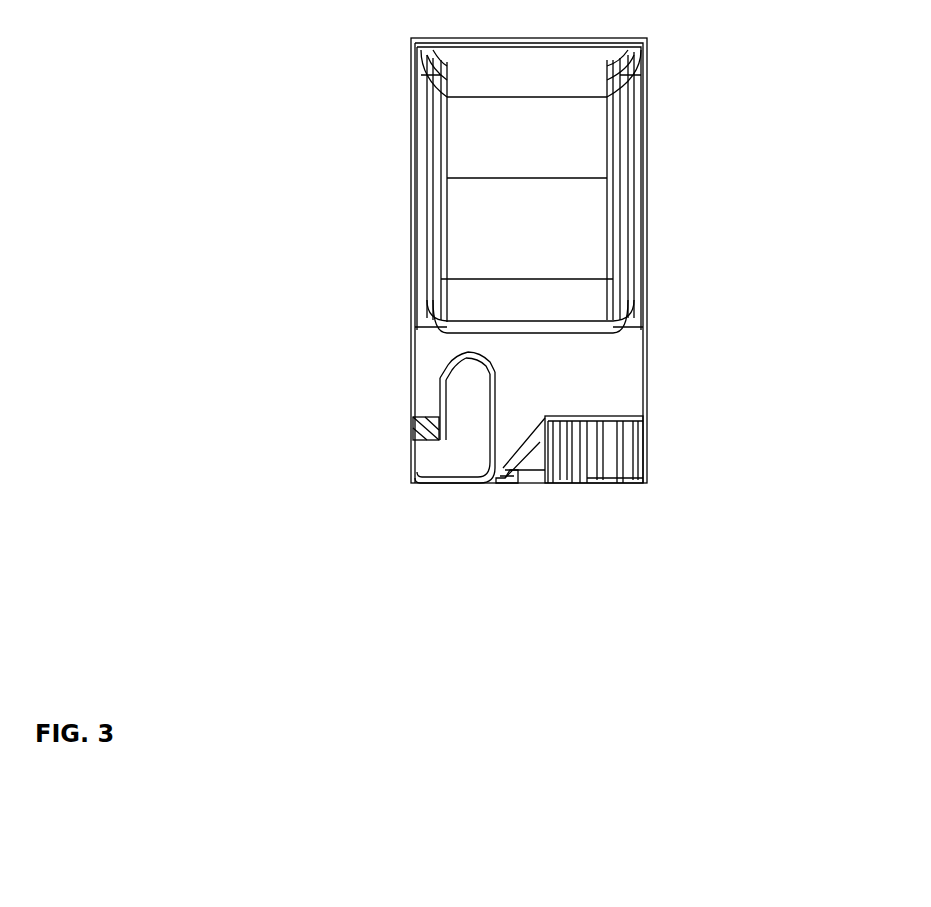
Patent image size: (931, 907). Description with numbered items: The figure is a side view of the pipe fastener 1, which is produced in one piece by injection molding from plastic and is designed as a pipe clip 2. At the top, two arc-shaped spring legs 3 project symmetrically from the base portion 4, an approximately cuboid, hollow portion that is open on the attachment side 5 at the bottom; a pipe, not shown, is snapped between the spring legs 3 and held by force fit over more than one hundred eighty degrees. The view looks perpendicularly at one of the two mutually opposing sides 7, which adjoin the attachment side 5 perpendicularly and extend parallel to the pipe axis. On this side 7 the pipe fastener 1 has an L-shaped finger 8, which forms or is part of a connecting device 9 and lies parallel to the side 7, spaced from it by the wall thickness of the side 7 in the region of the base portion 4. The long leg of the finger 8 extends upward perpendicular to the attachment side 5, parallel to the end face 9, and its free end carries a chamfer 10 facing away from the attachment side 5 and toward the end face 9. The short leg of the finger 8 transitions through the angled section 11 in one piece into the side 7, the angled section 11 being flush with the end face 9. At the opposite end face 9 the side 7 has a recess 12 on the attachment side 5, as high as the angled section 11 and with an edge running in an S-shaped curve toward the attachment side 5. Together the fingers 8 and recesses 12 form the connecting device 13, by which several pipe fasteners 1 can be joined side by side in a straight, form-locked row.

The pipe fastener 1 is at (281, 128).
The pipe clip 2 is at (529, 320).
The spring legs 3 is at (530, 135).
The base portion 4 is at (656, 450).
The attachment side 5 is at (543, 496).
The side 7 is at (535, 380).
The finger 8 is at (463, 410).
The end face 9 is at (648, 227).
The chamfer 10 is at (462, 360).
The angled section 11 is at (425, 457).
The recess 12 is at (622, 496).
The connecting device 13 is at (454, 420).